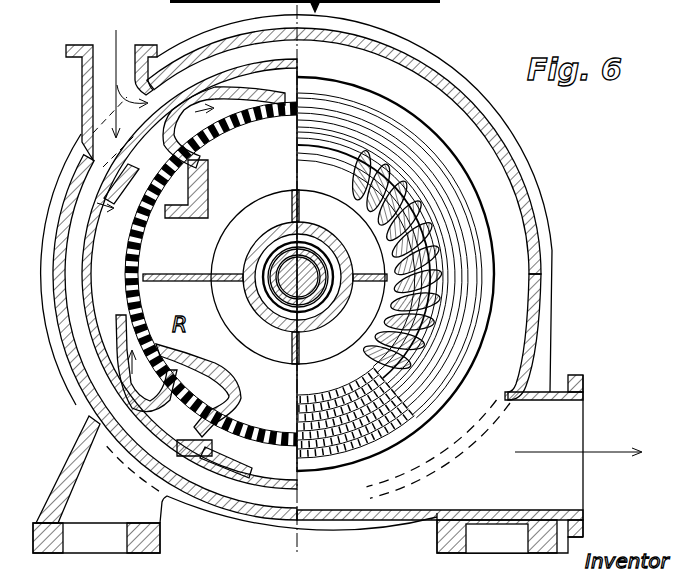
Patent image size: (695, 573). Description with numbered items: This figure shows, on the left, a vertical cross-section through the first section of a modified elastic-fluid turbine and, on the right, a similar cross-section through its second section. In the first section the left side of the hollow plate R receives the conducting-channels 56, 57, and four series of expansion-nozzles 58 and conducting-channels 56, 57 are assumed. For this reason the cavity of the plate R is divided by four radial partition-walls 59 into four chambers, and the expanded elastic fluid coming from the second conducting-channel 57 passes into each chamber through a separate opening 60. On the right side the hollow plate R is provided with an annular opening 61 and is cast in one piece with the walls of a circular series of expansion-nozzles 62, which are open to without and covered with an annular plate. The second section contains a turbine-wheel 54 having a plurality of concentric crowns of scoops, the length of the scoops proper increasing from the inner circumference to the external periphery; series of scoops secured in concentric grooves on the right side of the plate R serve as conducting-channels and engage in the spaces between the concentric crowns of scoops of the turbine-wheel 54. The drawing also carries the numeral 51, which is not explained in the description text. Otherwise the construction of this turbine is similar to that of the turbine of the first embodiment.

The rotor 51 is at (297, 198).
The turbine-wheel 54 is at (462, 213).
The conducting-channel 56 is at (180, 212).
The second conducting-channel 57 is at (226, 108).
The expansion-nozzle 58 is at (112, 236).
The radial partition-wall 59 is at (280, 285).
The opening 60 is at (244, 170).
The annular opening 61 is at (312, 312).
The expansion-nozzle 62 is at (338, 184).